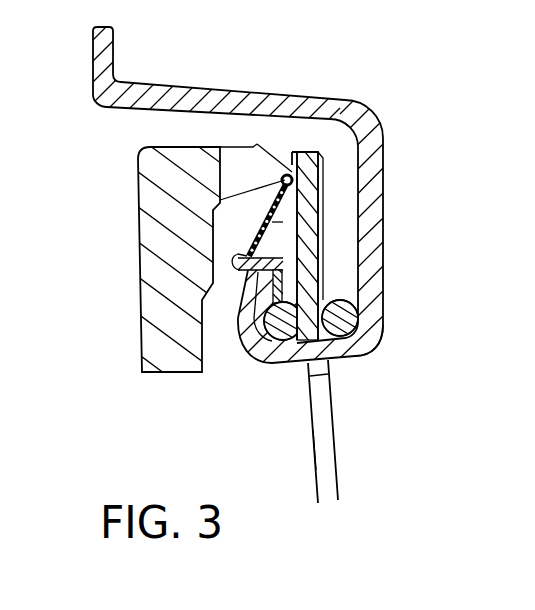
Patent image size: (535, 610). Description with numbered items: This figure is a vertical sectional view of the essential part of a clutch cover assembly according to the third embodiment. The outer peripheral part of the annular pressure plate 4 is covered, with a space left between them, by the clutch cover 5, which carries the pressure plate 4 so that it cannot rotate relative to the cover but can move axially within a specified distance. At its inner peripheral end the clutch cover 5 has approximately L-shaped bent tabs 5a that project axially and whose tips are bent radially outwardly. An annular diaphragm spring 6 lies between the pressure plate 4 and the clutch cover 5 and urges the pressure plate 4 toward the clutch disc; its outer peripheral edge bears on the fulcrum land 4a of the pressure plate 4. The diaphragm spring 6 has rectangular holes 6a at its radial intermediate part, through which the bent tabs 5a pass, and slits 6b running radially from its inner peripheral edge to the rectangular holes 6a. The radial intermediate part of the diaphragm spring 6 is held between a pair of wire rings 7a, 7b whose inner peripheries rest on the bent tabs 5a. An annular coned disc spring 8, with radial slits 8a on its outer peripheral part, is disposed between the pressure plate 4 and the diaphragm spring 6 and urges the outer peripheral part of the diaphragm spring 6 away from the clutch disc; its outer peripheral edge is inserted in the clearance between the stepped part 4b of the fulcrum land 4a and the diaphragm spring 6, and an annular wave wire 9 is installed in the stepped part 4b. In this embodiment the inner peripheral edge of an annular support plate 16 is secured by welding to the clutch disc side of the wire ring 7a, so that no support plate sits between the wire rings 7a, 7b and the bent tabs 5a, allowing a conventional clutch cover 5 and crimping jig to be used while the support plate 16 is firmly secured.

The pressure plate 4 is at (134, 247).
The fulcrum land 4a is at (237, 162).
The stepped part 4b is at (310, 157).
The clutch cover 5 is at (385, 150).
The bent tabs 5a is at (338, 352).
The diaphragm spring 6 is at (343, 477).
The rectangular holes 6a is at (312, 376).
The slits 6b is at (315, 432).
The wire ring 7a is at (262, 348).
The wire ring 7b is at (383, 328).
The coned disc spring 8 is at (318, 209).
The slits 8a is at (351, 112).
The wave wire 9 is at (284, 178).
The support plate 16 is at (320, 258).